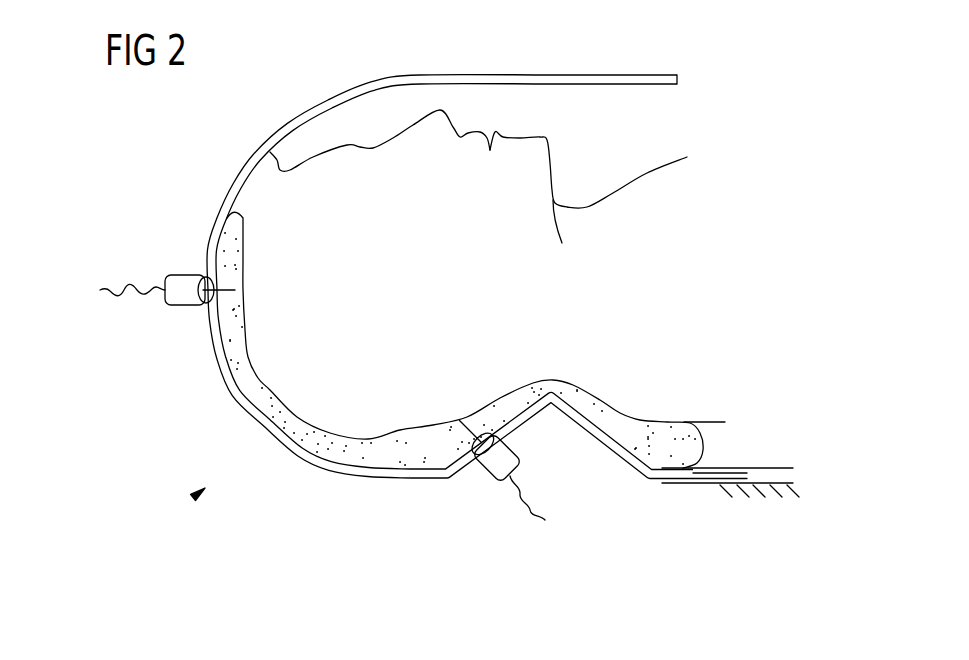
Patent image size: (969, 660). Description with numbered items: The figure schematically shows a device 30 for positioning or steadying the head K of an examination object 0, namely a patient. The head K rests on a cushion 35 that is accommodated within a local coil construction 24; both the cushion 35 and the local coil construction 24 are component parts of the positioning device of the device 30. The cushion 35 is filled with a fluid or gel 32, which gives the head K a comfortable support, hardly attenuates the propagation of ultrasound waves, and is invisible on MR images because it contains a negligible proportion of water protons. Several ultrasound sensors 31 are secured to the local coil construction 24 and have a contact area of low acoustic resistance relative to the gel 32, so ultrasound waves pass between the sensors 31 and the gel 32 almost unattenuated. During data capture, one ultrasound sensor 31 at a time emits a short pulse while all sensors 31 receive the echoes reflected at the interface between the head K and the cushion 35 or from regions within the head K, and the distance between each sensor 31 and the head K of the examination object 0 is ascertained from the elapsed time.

The local coil construction 24 is at (261, 421).
The cushion 35 is at (548, 380).
The fluid or gel 32 is at (364, 440).
The ultrasound sensors 31 is at (187, 275).
The head K is at (277, 203).
The examination object 0 is at (656, 176).
The device 30 is at (193, 497).